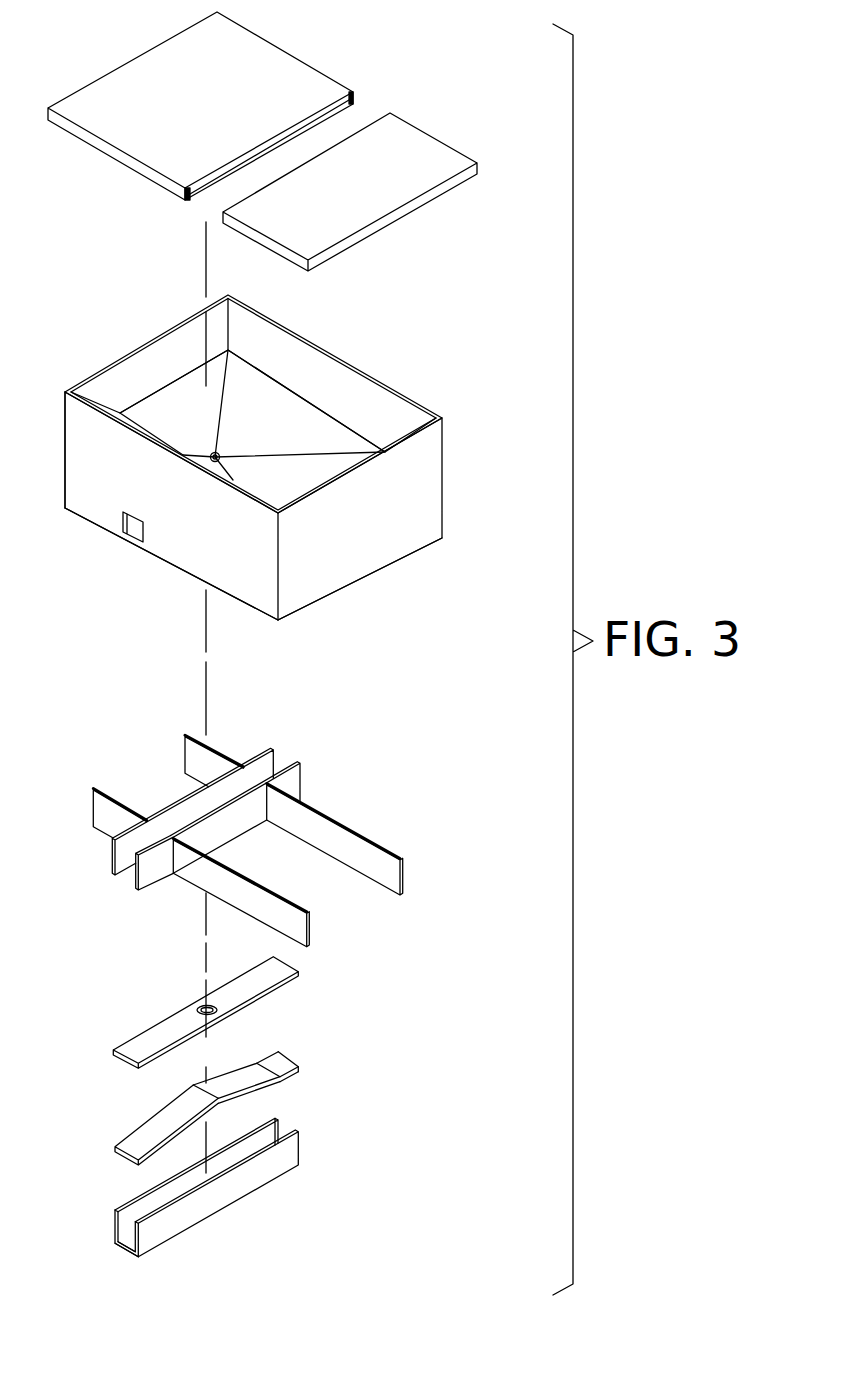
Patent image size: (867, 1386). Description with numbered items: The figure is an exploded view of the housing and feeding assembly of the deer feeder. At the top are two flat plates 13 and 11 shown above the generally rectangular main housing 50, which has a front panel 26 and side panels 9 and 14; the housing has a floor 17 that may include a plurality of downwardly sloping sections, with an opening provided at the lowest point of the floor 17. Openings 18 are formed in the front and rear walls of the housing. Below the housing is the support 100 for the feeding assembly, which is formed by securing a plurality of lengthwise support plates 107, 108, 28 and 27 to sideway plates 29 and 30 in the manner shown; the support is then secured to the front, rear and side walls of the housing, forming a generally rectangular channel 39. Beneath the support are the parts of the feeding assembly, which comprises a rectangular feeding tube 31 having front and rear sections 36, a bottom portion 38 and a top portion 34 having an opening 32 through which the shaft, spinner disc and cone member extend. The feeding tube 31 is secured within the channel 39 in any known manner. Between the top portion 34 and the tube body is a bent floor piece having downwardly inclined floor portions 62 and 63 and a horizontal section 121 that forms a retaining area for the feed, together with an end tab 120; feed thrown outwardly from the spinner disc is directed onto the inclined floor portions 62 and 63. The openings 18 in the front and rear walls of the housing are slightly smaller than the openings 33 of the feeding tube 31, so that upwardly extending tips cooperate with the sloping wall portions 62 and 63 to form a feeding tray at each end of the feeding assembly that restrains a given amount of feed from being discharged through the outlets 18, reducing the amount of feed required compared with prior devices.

The cover plate 13 is at (182, 83).
The cover plate 11 is at (375, 173).
The main housing 50 is at (236, 428).
The side panel 9 is at (65, 450).
The floor 17 is at (283, 430).
The openings 18 is at (128, 533).
The front panel 26 is at (190, 537).
The side panel 14 is at (373, 538).
The support 100 is at (236, 845).
The sideway plate 30 is at (263, 752).
The lengthwise support plate 107 is at (98, 812).
The lengthwise support plate 108 is at (192, 760).
The channel 39 is at (127, 882).
The sideway plate 29 is at (303, 785).
The lengthwise support plate 28 is at (267, 887).
The lengthwise support plate 27 is at (372, 833).
The top portion 34 is at (224, 1013).
The opening 32 is at (205, 1008).
The horizontal section 121 is at (133, 1147).
The downwardly inclined floor portion 62 is at (175, 1120).
The downwardly inclined floor portion 63 is at (240, 1078).
The end tab 120 is at (280, 1067).
The feeding tube 31 is at (225, 1217).
The front and rear sections 36 is at (115, 1218).
The openings 33 is at (115, 1237).
The bottom portion 38 is at (120, 1247).